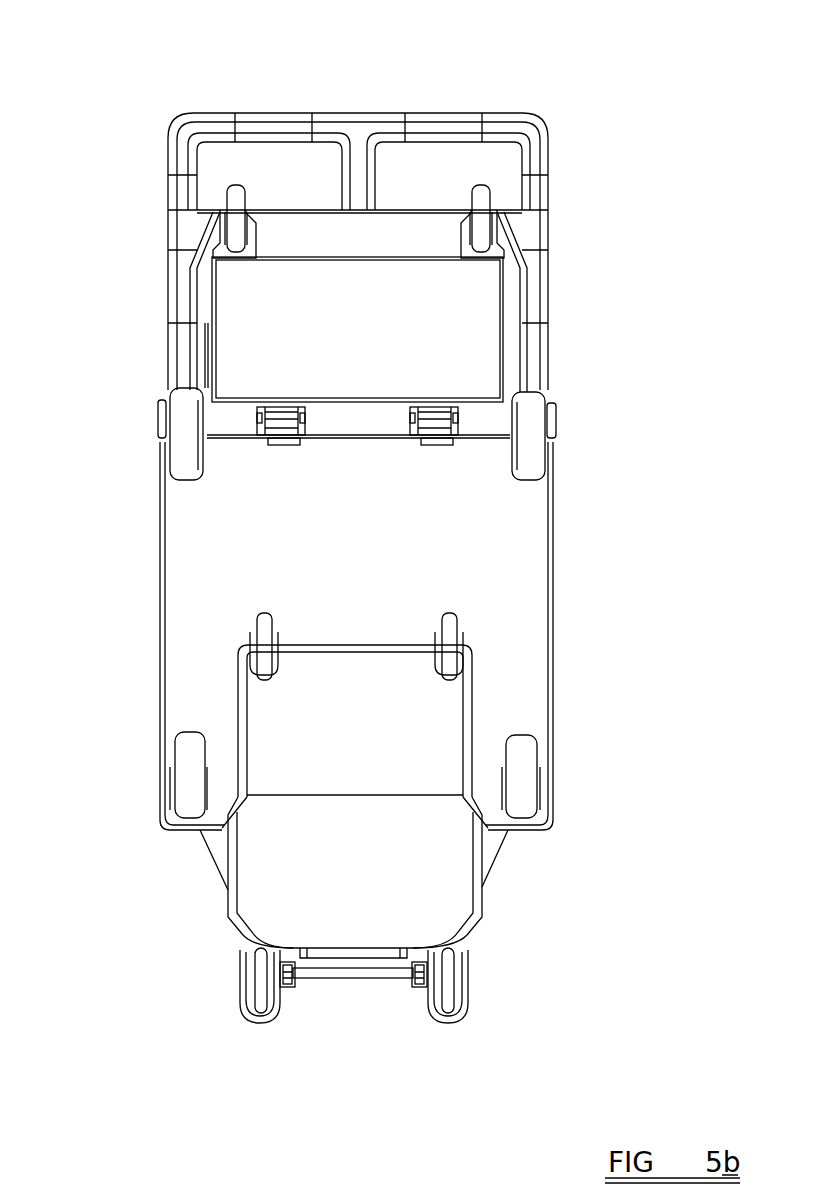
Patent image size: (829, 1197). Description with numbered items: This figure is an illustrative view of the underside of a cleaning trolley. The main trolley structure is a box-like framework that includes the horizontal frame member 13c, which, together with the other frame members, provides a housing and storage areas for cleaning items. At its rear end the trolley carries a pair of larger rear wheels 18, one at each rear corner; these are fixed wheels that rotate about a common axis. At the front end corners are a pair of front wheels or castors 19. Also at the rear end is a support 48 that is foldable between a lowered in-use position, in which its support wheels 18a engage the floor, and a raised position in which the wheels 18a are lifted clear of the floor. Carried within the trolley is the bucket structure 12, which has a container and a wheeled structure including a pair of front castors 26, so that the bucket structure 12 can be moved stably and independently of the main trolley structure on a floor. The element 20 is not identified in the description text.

The handle frame 20 is at (443, 142).
The support wheels 18a is at (236, 192).
The support 48 is at (478, 283).
The rear wheels 18 is at (184, 431).
The horizontal frame member 13c is at (510, 583).
The front castors 26 is at (265, 633).
The front wheels or castors 19 is at (188, 752).
The bucket structure 12 is at (490, 870).